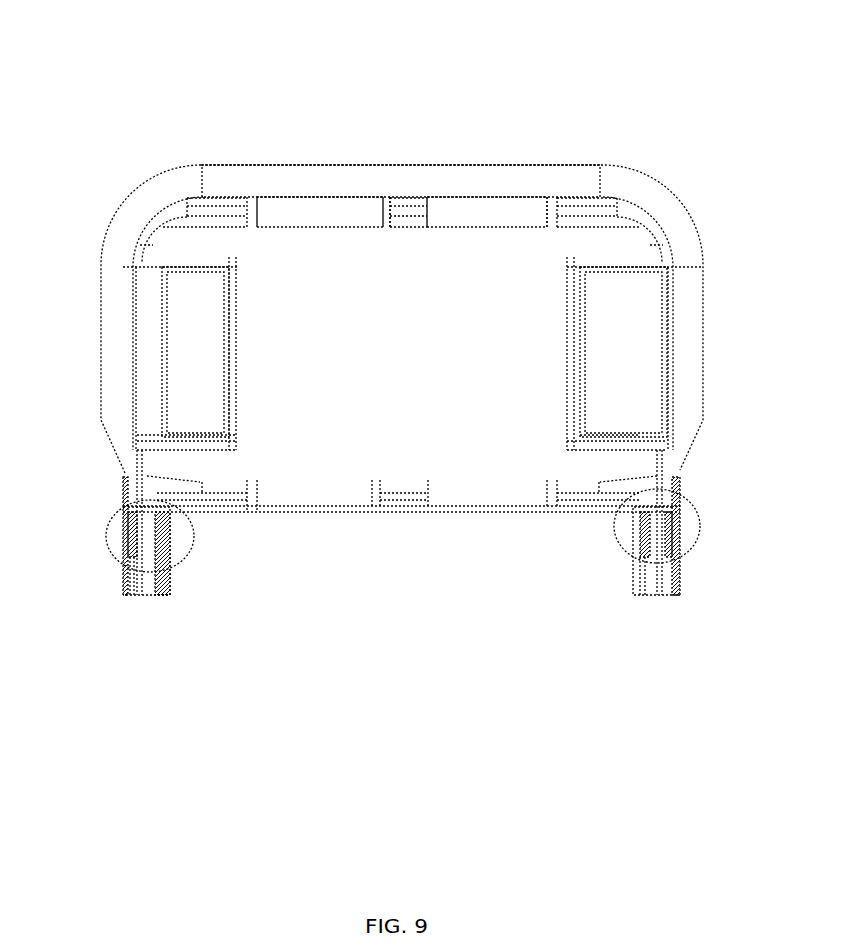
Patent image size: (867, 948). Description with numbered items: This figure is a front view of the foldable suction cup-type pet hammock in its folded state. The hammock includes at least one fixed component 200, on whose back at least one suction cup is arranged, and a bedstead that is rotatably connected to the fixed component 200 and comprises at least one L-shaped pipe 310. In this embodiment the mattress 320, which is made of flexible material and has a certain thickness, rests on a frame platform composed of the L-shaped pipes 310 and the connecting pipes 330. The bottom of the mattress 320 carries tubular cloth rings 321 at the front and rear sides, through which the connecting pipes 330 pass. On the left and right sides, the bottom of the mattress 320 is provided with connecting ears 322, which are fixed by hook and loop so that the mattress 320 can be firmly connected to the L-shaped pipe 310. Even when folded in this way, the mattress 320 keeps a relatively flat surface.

The fixed component 200 is at (146, 579).
The L-shaped pipe 310 is at (147, 473).
The mattress 320 is at (232, 185).
The tubular cloth ring 321 is at (320, 213).
The connecting ear 322 is at (190, 335).
The connecting pipe 330 is at (410, 205).